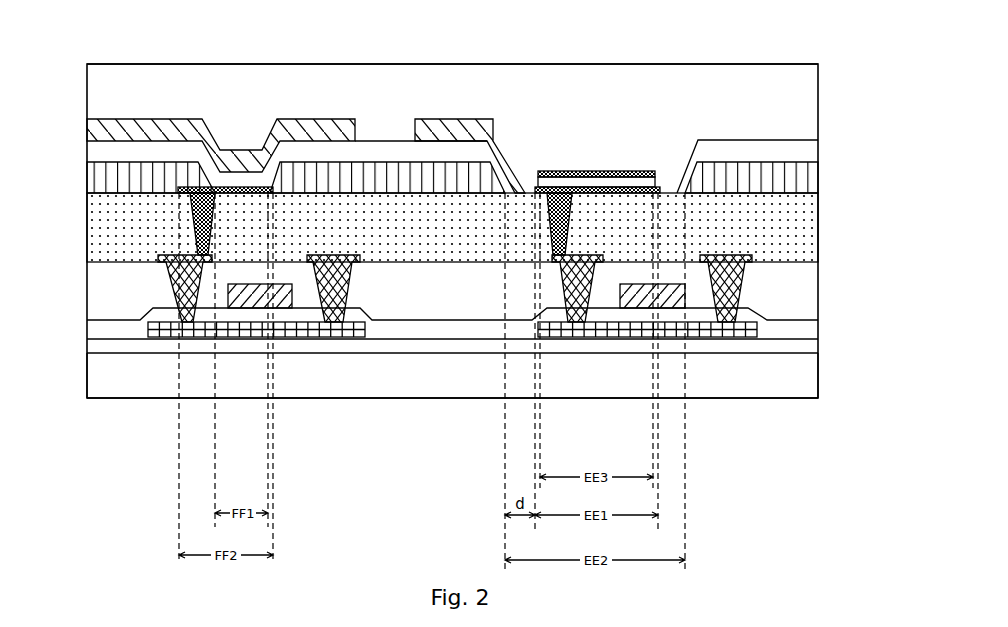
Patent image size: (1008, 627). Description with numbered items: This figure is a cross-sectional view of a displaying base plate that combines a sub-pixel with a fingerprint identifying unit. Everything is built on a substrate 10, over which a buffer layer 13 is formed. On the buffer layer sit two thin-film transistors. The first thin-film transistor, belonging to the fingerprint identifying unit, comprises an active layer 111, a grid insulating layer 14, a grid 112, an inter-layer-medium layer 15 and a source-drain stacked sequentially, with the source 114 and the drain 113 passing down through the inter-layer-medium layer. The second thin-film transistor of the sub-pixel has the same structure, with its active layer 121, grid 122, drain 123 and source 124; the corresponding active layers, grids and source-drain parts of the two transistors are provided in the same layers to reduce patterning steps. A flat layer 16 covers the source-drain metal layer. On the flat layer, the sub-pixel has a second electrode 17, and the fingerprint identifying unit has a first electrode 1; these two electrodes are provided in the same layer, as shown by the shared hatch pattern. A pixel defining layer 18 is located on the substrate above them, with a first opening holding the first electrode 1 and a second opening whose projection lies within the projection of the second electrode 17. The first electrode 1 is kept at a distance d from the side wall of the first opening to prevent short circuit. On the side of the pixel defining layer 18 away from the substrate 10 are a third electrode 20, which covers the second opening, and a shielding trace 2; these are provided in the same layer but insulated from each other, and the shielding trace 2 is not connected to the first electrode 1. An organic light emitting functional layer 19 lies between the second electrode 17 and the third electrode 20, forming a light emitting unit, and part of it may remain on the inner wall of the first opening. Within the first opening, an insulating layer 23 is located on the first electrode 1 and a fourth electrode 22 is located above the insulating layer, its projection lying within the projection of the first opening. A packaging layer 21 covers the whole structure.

The first electrode 1 is at (597, 192).
The shielding trace 2 is at (468, 130).
The substrate 10 is at (788, 385).
The buffer layer 13 is at (782, 348).
The grid insulating layer 14 is at (782, 332).
The inter-layer-medium layer 15 is at (782, 295).
The flat layer 16 is at (782, 230).
The second electrode 17 is at (200, 222).
The pixel defining layer 18 is at (115, 183).
The organic light emitting functional layer 19 is at (117, 155).
The third electrode 20 is at (115, 132).
The packaging layer 21 is at (140, 82).
The fourth electrode 22 is at (547, 172).
The insulating layer 23 is at (563, 183).
The active layer 111 is at (643, 332).
The grid 112 is at (675, 297).
The drain 113 is at (580, 295).
The source 114 is at (730, 295).
The active layer 121 is at (248, 327).
The grid 122 is at (282, 300).
The drain 123 is at (188, 295).
The source 124 is at (337, 297).